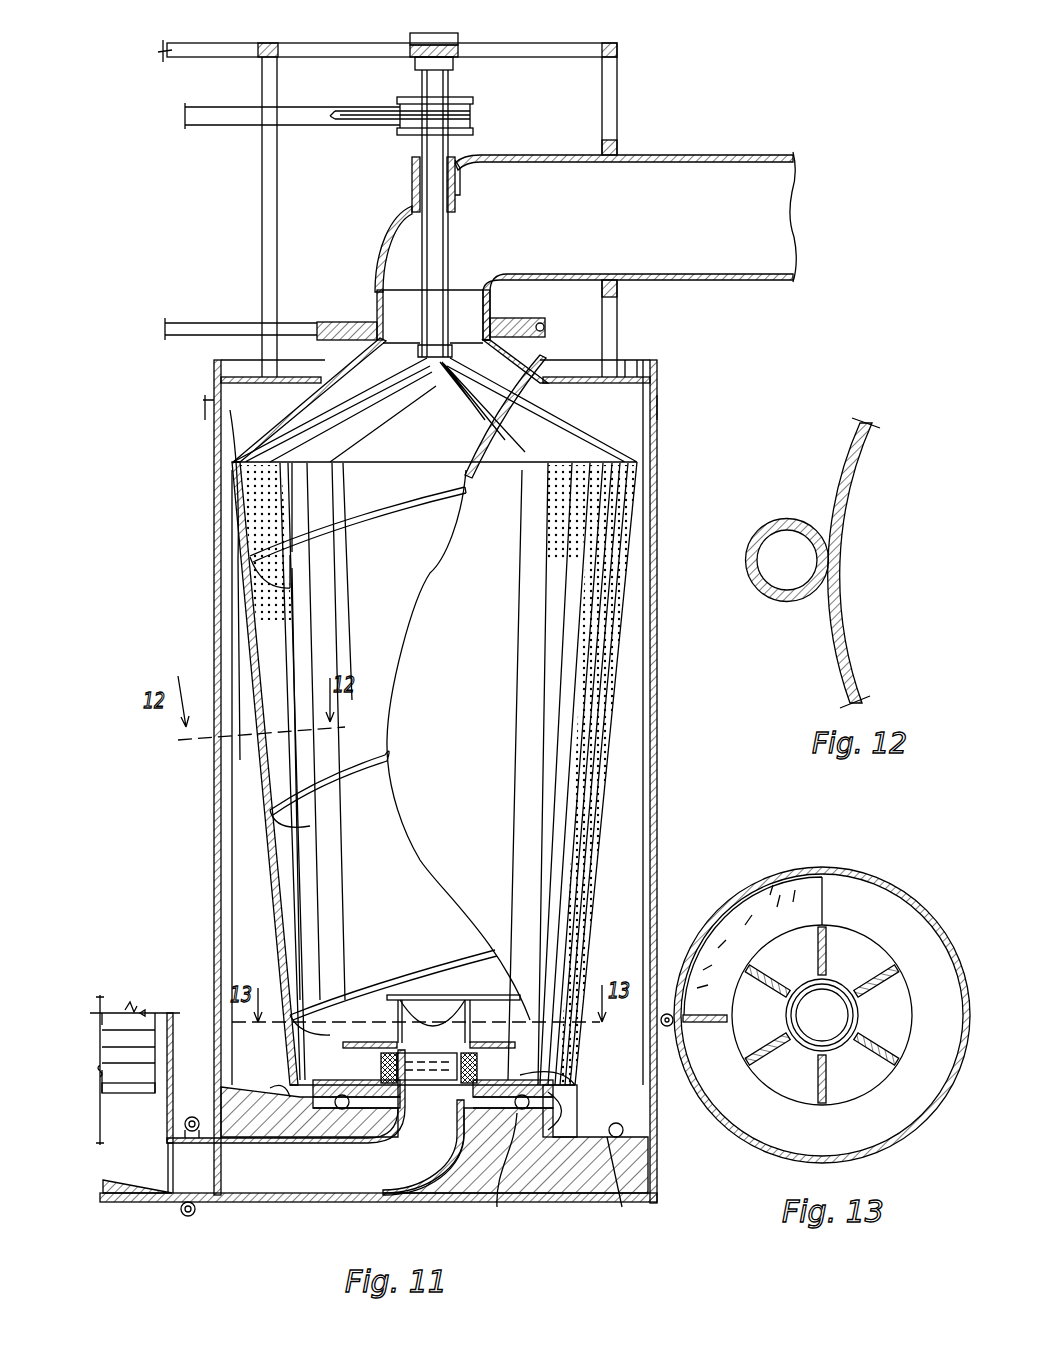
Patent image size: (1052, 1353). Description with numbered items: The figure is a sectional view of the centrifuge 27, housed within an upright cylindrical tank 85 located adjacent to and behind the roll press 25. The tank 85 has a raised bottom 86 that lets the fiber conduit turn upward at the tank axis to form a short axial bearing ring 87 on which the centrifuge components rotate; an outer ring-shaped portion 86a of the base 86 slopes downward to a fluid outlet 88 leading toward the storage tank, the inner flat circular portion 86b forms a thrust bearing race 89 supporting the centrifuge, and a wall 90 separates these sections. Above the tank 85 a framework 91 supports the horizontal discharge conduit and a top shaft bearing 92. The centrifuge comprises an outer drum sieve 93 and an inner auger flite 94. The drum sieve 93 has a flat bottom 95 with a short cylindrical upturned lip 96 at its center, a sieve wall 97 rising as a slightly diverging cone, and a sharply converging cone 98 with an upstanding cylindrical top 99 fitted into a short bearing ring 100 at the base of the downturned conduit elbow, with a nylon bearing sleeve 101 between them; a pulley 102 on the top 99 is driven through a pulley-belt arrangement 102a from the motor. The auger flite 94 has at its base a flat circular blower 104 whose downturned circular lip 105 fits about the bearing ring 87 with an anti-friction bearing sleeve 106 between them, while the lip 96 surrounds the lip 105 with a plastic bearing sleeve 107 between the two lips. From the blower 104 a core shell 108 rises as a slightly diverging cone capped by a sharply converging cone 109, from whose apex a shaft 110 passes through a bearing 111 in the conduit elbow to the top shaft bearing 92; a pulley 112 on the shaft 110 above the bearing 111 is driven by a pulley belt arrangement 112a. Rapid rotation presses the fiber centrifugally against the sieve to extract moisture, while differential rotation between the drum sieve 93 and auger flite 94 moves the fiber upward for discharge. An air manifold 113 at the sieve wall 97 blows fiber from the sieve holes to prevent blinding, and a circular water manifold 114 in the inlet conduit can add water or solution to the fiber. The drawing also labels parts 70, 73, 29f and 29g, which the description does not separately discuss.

In FIG. 11, the framework 91 is at (360, 48).
In FIG. 11, the top shaft bearing 92 is at (462, 47).
In FIG. 11, the pulley belt arrangement 112a is at (226, 110).
In FIG. 11, the pulley 112 is at (470, 100).
In FIG. 11, the bearing 111 is at (410, 172).
In FIG. 11, the outlet pipe 29g is at (664, 161).
In FIG. 11, the shaft 110 is at (448, 250).
In FIG. 11, the bearing sleeve 101 is at (494, 285).
In FIG. 11, the upstanding cylindrical top 99 is at (468, 302).
In FIG. 11, the bearing ring 100 is at (500, 316).
In FIG. 11, the pulley-belt arrangement 102a is at (226, 320).
In FIG. 11, the pulley 102 is at (345, 320).
In FIG. 11, the centrifuge 27 is at (670, 401).
In FIG. 11, the sharply converging cone 109 is at (379, 410).
In FIG. 11, the sharply converging cone 98 is at (537, 416).
In FIG. 11, the outer drum sieve 93 is at (632, 490).
In FIG. 11, the inner auger flite 94 is at (366, 515).
In FIG. 13, the inner auger flite 94 is at (808, 902).
In FIG. 11, the core shell 108 is at (353, 731).
In FIG. 11, the air manifold 113 is at (242, 665).
In FIG. 12, the air manifold 113 is at (793, 598).
In FIG. 13, the air manifold 113 is at (680, 1025).
In FIG. 11, the upright cylindrical tank 85 is at (658, 680).
In FIG. 11, the sieve wall 97 is at (585, 772).
In FIG. 12, the sieve wall 97 is at (856, 670).
In FIG. 13, the sieve wall 97 is at (882, 875).
In FIG. 11, the roll press 25 is at (142, 996).
In FIG. 11, the bracket 70 is at (190, 997).
In FIG. 11, the flat circular blower 104 is at (470, 992).
In FIG. 13, the flat circular blower 104 is at (825, 1015).
In FIG. 11, the chute 73 is at (115, 1040).
In FIG. 11, the outer ring shaped portion 86a is at (250, 1090).
In FIG. 11, the wall 90 is at (272, 1086).
In FIG. 11, the axial bearing ring 87 is at (427, 1051).
In FIG. 13, the axial bearing ring 87 is at (848, 1004).
In FIG. 11, the anti-friction bearing sleeve 106 is at (466, 1038).
In FIG. 13, the anti-friction bearing sleeve 106 is at (857, 1020).
In FIG. 11, the cylindrical upturned lip 96 is at (480, 1068).
In FIG. 11, the flat bottom 95 is at (530, 1075).
In FIG. 11, the circular water manifold 114 is at (202, 1115).
In FIG. 11, the downturned circular lip 105 is at (470, 1086).
In FIG. 11, the plastic bearing sleeve 107 is at (470, 1101).
In FIG. 11, the thrust bearing race 89 is at (572, 1122).
In FIG. 11, the fluid outlet 88 is at (624, 1130).
In FIG. 11, the drain channel 29f is at (300, 1195).
In FIG. 11, the raised bottom 86 is at (520, 1190).
In FIG. 11, the inner flat circular portion 86b is at (497, 1207).